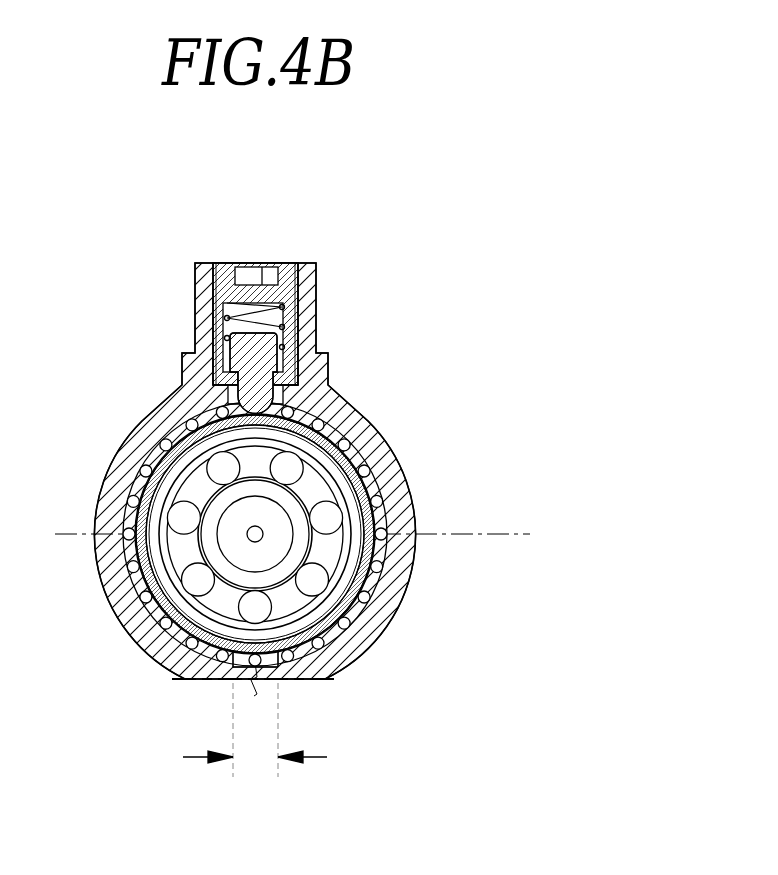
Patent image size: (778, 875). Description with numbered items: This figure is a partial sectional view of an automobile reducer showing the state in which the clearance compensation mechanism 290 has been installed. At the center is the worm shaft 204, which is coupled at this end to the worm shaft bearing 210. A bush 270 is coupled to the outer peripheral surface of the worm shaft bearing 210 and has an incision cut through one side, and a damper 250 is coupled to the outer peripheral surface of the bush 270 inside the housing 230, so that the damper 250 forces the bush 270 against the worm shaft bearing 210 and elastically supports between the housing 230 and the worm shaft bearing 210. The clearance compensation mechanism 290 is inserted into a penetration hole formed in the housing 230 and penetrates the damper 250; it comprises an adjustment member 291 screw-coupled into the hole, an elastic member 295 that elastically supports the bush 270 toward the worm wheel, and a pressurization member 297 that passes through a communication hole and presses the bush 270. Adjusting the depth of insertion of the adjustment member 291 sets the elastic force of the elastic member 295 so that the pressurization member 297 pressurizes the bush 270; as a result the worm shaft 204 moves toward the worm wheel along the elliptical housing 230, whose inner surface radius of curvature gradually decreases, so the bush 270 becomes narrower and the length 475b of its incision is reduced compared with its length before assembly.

The housing 230 is at (142, 428).
The damper 250 is at (357, 455).
The bush 270 is at (367, 492).
The worm shaft bearing 210 is at (233, 553).
The worm shaft 204 is at (248, 652).
The length of the incision 475b is at (255, 746).
The clearance compensation mechanism 290 is at (455, 298).
The adjustment member 291 is at (287, 279).
The elastic member 295 is at (282, 328).
The pressurization member 297 is at (279, 360).